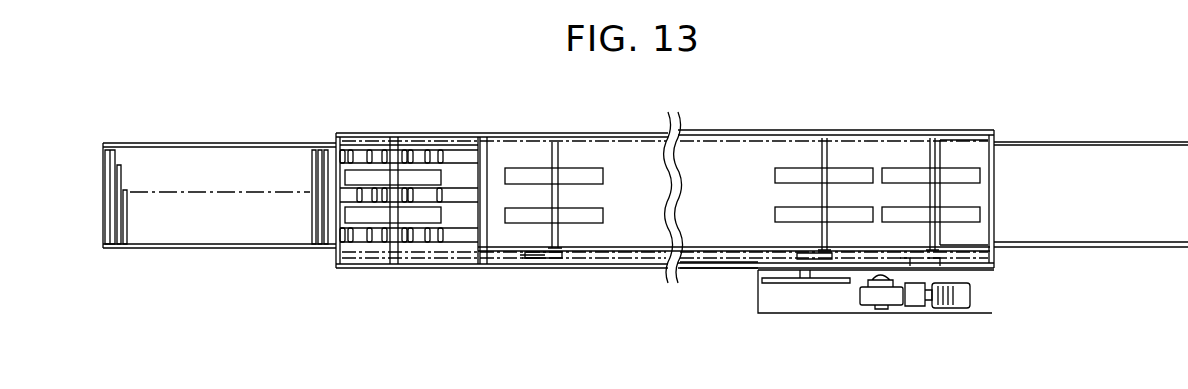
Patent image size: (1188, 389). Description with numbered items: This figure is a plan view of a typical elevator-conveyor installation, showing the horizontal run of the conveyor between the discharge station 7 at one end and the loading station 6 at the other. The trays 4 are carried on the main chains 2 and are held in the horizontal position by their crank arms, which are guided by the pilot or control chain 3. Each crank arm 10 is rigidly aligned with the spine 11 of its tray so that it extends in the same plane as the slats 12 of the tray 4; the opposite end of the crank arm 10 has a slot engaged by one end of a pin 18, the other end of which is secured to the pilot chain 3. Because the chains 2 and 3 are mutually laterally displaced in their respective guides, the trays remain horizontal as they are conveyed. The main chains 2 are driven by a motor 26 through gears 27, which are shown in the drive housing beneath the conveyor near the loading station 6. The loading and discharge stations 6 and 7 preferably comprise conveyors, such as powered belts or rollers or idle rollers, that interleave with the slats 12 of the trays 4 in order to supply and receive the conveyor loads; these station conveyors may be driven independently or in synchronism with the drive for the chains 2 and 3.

The main chain 2 is at (705, 138).
The pilot chain 3 is at (712, 266).
The tray 4 is at (603, 175).
The loading station 6 is at (1055, 200).
The discharge station 7 is at (249, 228).
The crank arm 10 is at (553, 258).
The spine 11 is at (563, 250).
The slats 12 is at (357, 175).
The pin 18 is at (527, 258).
The motor 26 is at (960, 309).
The gears 27 is at (865, 306).